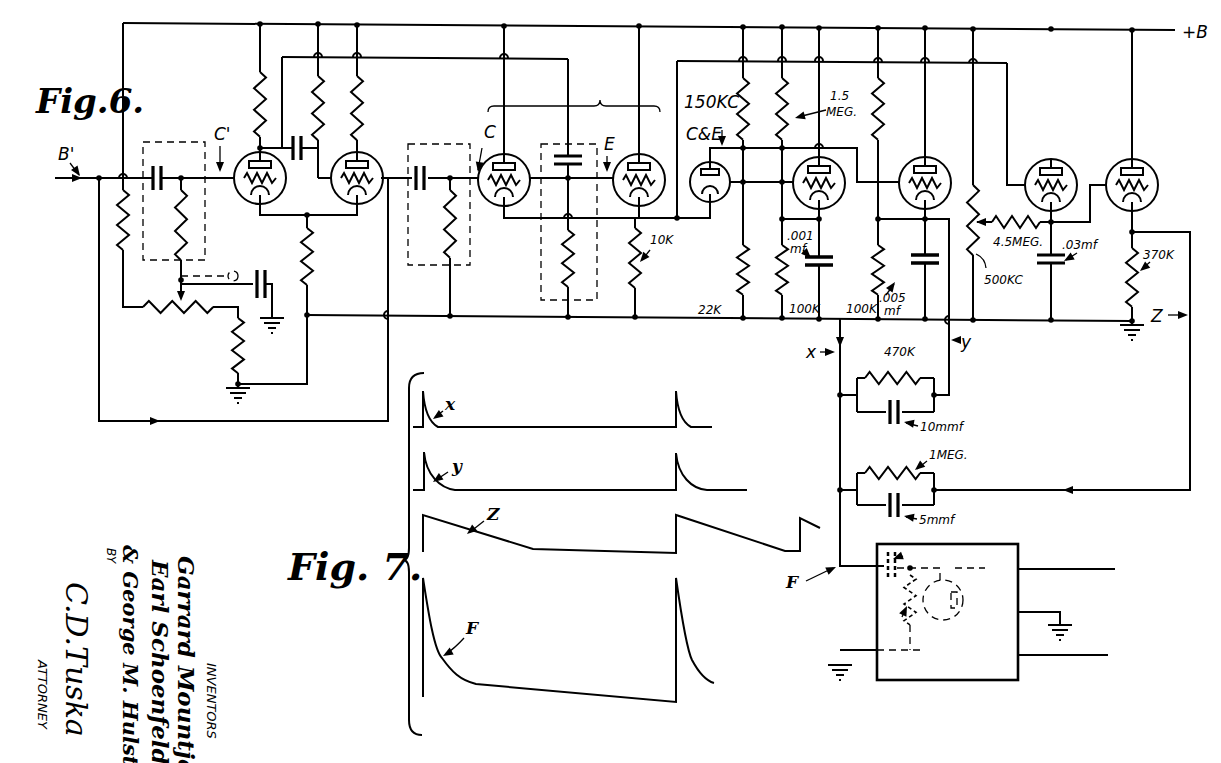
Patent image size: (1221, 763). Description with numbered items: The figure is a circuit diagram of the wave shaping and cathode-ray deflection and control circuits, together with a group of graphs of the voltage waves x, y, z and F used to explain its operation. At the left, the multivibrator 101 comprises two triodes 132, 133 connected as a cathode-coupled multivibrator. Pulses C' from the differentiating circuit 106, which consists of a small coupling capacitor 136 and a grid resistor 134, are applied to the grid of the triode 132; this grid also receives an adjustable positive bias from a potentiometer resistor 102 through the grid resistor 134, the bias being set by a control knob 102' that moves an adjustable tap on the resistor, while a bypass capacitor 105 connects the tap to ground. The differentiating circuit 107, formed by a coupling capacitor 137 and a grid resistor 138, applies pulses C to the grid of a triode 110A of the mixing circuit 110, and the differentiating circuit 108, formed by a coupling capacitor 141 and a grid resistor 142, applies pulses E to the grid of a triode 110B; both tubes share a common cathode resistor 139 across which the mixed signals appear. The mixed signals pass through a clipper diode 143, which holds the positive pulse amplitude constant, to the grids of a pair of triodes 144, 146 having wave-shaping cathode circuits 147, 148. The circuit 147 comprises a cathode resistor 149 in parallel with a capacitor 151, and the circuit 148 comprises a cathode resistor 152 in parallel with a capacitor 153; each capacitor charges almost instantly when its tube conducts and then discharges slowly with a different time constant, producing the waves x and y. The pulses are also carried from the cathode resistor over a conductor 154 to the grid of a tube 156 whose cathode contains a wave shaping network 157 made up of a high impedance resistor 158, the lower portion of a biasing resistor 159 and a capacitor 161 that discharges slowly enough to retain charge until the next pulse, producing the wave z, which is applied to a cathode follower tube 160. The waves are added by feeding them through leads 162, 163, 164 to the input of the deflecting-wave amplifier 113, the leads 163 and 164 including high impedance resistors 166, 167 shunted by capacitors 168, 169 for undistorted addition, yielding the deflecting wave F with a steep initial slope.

The multivibrator 101 is at (312, 209).
The potentiometer resistor 102 is at (172, 291).
The control knob 102' is at (228, 271).
The bypass capacitor 105 is at (286, 290).
The differentiating circuit 106 is at (186, 131).
The differentiating circuit 107 is at (441, 133).
The differentiating circuit 108 is at (540, 232).
The mixing circuit 110 is at (574, 94).
The triode 110A is at (524, 157).
The triode 110B is at (655, 160).
The deflecting-wave amplifier 113 is at (1020, 606).
The triode 132 is at (240, 200).
The triode 133 is at (375, 152).
The grid resistor 134 is at (191, 229).
The coupling capacitor 136 is at (162, 172).
The coupling capacitor 137 is at (428, 176).
The grid resistor 138 is at (442, 230).
The cathode resistor 139 is at (641, 271).
The coupling capacitor 141 is at (581, 152).
The grid resistor 142 is at (558, 256).
The clipper diode 143 is at (714, 214).
The triode 144 is at (831, 159).
The triode 146 is at (930, 162).
The wave-shaping cathode circuit 147 is at (808, 292).
The wave-shaping cathode circuit 148 is at (892, 238).
The cathode resistor 149 is at (778, 300).
The capacitor 151 is at (827, 256).
The cathode resistor 152 is at (876, 252).
The capacitor 153 is at (930, 252).
The conductor 154 is at (706, 60).
The tube 156 is at (1086, 153).
The wave shaping network 157 is at (1026, 310).
The high impedance resistor 158 is at (994, 220).
The biasing resistor 159 is at (982, 181).
The cathode follower tube 160 is at (1162, 155).
The capacitor 161 is at (1068, 274).
The lead 162 is at (840, 380).
The lead 163 is at (950, 385).
The lead 164 is at (1189, 353).
The high impedance resistor 166 is at (870, 372).
The high impedance resistor 167 is at (897, 469).
The capacitor 168 is at (886, 422).
The capacitor 169 is at (886, 516).